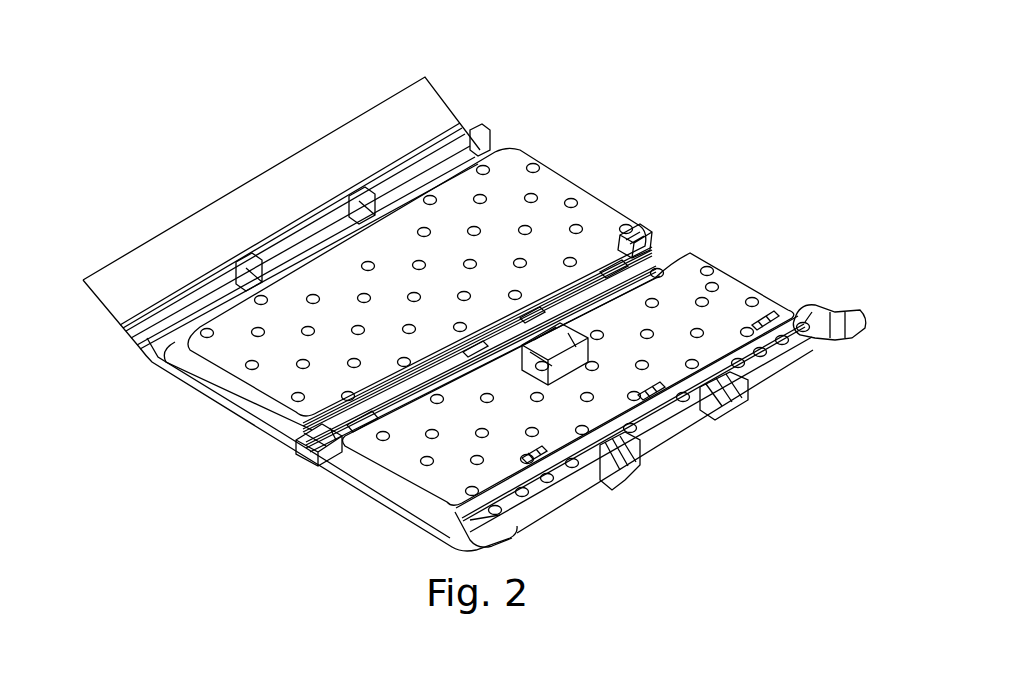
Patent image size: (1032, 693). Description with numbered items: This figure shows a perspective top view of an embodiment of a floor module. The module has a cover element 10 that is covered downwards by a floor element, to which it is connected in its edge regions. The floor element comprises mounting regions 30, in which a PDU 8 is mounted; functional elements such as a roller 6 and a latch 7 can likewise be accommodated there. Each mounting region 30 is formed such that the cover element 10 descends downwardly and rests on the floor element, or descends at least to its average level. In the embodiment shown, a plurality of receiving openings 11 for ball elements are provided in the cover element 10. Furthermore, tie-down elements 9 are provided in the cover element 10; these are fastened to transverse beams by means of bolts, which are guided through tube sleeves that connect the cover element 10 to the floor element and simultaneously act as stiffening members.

The roller 6 is at (296, 460).
The latch 7 is at (320, 415).
The PDU 8 is at (567, 275).
The tie-down element 9 is at (775, 312).
The cover element 10 is at (560, 185).
The receiving opening for ball element 11 is at (585, 224).
The mounting region 30 is at (650, 243).